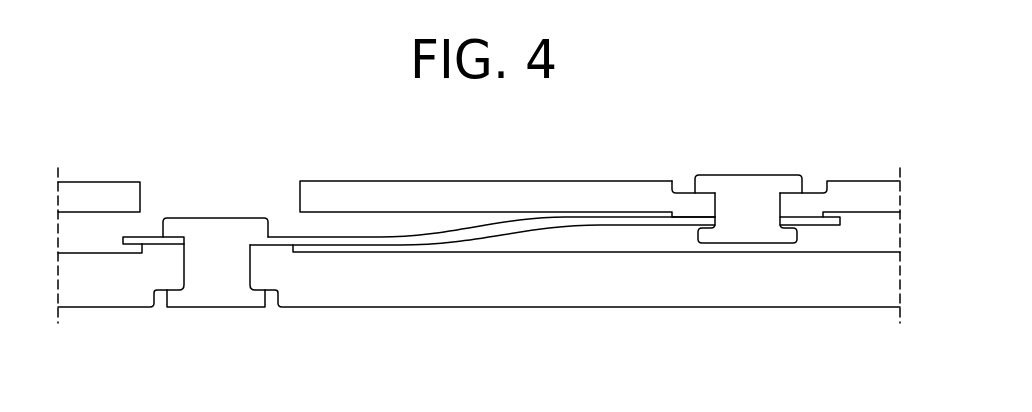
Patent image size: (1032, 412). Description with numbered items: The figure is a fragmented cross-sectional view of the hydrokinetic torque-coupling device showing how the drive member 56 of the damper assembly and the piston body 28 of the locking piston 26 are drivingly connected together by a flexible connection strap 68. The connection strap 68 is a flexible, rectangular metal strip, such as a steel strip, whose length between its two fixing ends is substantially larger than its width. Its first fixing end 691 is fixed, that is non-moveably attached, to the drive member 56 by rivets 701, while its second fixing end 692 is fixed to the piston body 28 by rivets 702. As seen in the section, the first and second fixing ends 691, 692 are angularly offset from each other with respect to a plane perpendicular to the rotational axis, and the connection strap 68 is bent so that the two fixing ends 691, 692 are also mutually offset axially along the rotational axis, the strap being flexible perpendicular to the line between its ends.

The locking piston 26 is at (640, 327).
The piston body 28 is at (473, 297).
The drive member 56 is at (538, 181).
The connection strap 68 is at (435, 232).
The first fixing end 691 is at (147, 237).
The second fixing end 692 is at (817, 226).
The rivets 701 is at (750, 188).
The rivets 702 is at (215, 298).